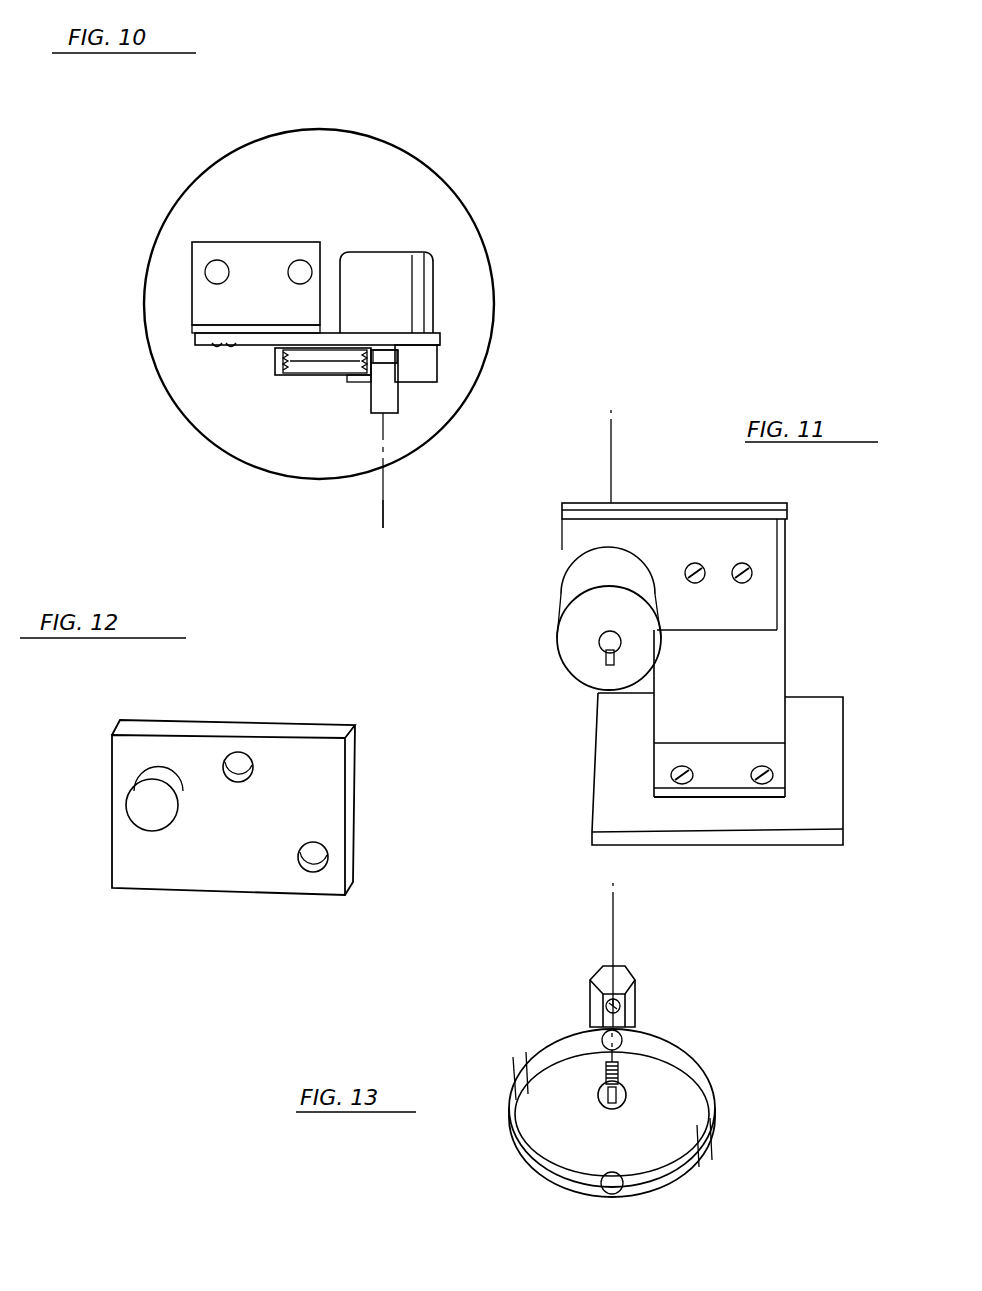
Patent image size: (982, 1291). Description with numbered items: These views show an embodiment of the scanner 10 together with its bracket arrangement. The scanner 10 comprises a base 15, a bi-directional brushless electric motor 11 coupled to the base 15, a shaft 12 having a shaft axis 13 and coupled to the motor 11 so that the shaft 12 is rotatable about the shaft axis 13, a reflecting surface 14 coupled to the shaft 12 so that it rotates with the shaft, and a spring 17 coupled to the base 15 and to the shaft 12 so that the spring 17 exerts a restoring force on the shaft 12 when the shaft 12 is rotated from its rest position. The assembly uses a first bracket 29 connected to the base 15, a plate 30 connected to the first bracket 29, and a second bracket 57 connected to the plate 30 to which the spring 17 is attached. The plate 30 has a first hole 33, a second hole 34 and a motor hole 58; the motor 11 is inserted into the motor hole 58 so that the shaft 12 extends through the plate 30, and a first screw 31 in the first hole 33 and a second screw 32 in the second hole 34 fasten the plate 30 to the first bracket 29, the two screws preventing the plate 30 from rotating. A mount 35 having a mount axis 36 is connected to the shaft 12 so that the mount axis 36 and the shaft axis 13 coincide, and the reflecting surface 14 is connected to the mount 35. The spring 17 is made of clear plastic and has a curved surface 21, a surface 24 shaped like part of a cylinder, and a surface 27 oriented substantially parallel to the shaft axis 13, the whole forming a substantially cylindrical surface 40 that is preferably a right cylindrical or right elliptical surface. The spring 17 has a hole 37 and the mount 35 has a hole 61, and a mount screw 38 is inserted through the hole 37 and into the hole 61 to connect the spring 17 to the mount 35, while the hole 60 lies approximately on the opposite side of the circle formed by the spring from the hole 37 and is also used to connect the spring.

In FIG. 10, the scanner 10 is at (150, 138).
In FIG. 11, the scanner 10 is at (535, 505).
In FIG. 10, the bi-directional brushless electric motor 11 is at (385, 263).
In FIG. 11, the bi-directional brushless electric motor 11 is at (570, 653).
In FIG. 10, the shaft 12 is at (432, 357).
In FIG. 10, the shaft axis 13 is at (380, 527).
In FIG. 11, the shaft axis 13 is at (611, 450).
In FIG. 10, the reflecting surface 14 is at (393, 400).
In FIG. 10, the base 15 is at (180, 387).
In FIG. 11, the base 15 is at (592, 796).
In FIG. 10, the spring 17 is at (288, 375).
In FIG. 13, the spring 17 is at (716, 1108).
In FIG. 10, the curved surface 21 is at (310, 370).
In FIG. 10, the surface shaped like a part of a cylindrical surface 24 is at (322, 370).
In FIG. 10, the surface of the spring 27 is at (298, 375).
In FIG. 10, the first bracket 29 is at (195, 253).
In FIG. 11, the first bracket 29 is at (773, 757).
In FIG. 10, the plate 30 is at (332, 337).
In FIG. 11, the plate 30 is at (642, 537).
In FIG. 12, the plate 30 is at (202, 858).
In FIG. 11, the first screw 31 is at (695, 563).
In FIG. 11, the second screw 32 is at (749, 565).
In FIG. 12, the first hole 33 is at (242, 753).
In FIG. 12, the second hole 34 is at (322, 853).
In FIG. 10, the mount 35 is at (397, 392).
In FIG. 13, the mount 35 is at (625, 983).
In FIG. 10, the mount axis 36 is at (382, 500).
In FIG. 13, the mount axis 36 is at (613, 918).
In FIG. 13, the hole 37 is at (624, 1043).
In FIG. 13, the mount screw 38 is at (619, 1106).
In FIG. 13, the cylindrical surface 40 is at (513, 1143).
In FIG. 10, the second bracket 57 is at (438, 360).
In FIG. 12, the motor hole 58 is at (127, 803).
In FIG. 13, the hole 60 is at (614, 1194).
In FIG. 13, the hole 61 is at (606, 1006).